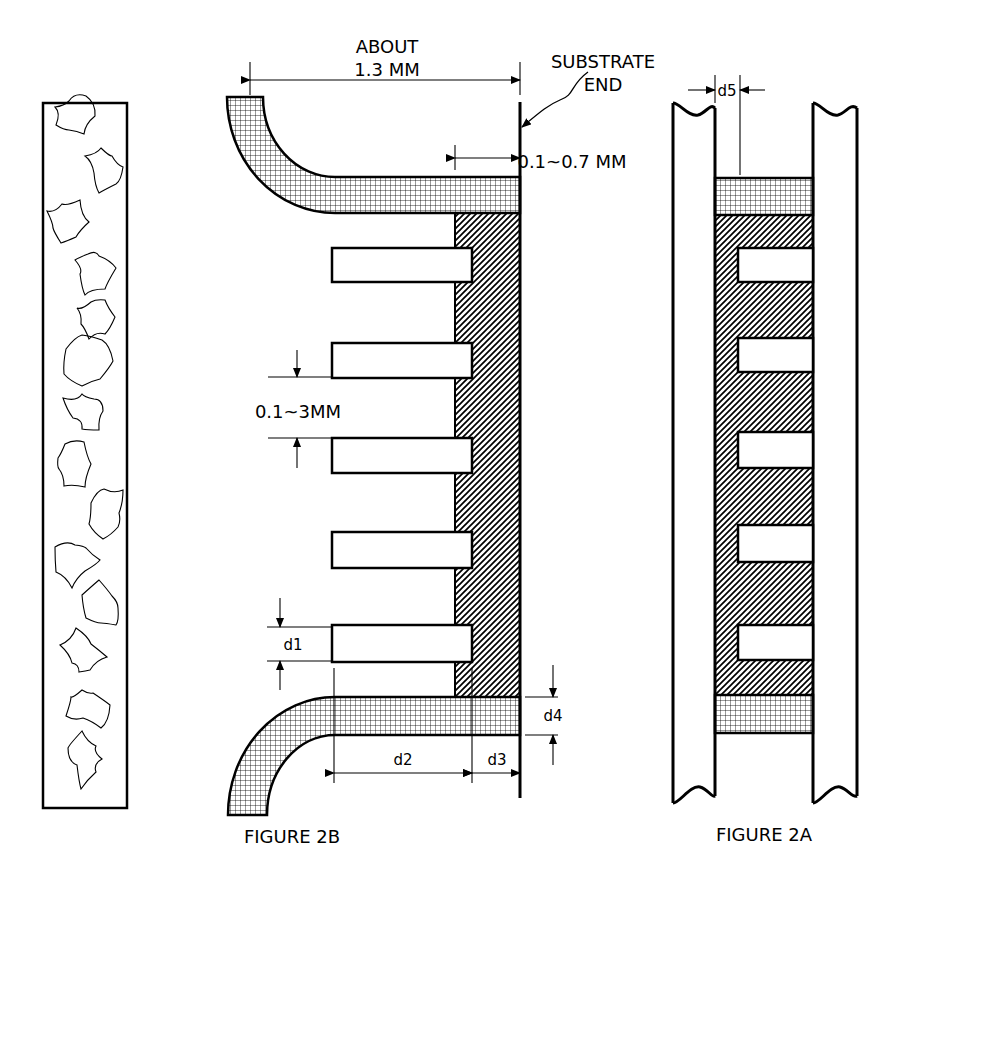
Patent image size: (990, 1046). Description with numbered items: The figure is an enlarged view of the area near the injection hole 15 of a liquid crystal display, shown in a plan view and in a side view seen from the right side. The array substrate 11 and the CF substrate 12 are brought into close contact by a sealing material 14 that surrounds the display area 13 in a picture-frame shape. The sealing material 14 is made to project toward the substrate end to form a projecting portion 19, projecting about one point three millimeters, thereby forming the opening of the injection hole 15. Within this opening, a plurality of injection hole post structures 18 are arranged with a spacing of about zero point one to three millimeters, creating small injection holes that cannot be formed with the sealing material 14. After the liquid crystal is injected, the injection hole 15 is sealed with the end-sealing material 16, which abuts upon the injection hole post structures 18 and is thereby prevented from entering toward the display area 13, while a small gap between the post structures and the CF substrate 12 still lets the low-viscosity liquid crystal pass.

In FIG. 2A, the array substrate 11 is at (858, 598).
In FIG. 2A, the CF substrate 12 is at (673, 533).
In FIG. 2B, the display area 13 is at (127, 453).
In FIG. 2A, the sealing material 14 is at (813, 186).
In FIG. 2B, the injection hole 15 is at (550, 343).
In FIG. 2A, the end-sealing material 16 is at (813, 495).
In FIG. 2B, the end-sealing material 16 is at (522, 413).
In FIG. 2A, the injection hole post structure 18 is at (815, 352).
In FIG. 2B, the injection hole post structure 18 is at (332, 275).
In FIG. 2B, the projecting portion 19 is at (333, 165).